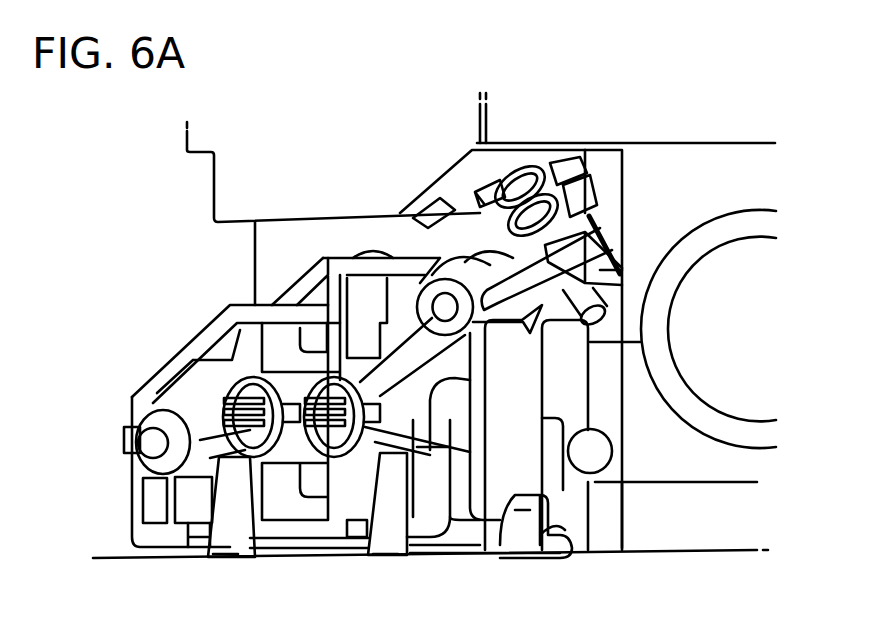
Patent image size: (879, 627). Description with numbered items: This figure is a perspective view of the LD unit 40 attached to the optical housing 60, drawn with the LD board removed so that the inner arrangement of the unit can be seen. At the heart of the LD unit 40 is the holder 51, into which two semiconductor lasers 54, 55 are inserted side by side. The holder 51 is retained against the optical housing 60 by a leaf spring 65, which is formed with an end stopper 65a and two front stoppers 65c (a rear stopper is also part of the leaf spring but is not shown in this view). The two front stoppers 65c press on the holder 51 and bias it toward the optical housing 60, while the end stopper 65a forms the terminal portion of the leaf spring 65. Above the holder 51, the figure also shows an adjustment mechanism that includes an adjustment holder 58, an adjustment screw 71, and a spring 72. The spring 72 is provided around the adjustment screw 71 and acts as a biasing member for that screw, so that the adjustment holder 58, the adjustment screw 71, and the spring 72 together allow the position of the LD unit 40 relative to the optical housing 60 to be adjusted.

The LD unit 40 is at (176, 284).
The holder 51 is at (196, 346).
The semiconductor laser 54 is at (260, 432).
The semiconductor laser 55 is at (340, 430).
The adjustment holder 58 is at (605, 255).
The optical housing 60 is at (682, 162).
The leaf spring 65 is at (437, 558).
The end stopper 65a is at (518, 545).
The front stopper 65c is at (230, 555).
The adjustment screw 71 is at (598, 312).
The spring 72 is at (546, 162).